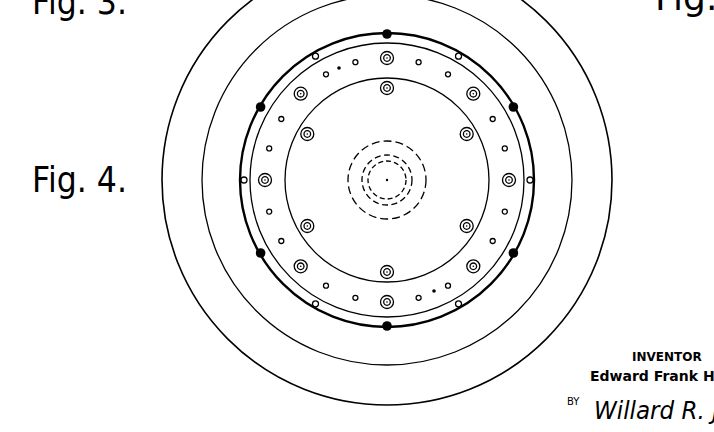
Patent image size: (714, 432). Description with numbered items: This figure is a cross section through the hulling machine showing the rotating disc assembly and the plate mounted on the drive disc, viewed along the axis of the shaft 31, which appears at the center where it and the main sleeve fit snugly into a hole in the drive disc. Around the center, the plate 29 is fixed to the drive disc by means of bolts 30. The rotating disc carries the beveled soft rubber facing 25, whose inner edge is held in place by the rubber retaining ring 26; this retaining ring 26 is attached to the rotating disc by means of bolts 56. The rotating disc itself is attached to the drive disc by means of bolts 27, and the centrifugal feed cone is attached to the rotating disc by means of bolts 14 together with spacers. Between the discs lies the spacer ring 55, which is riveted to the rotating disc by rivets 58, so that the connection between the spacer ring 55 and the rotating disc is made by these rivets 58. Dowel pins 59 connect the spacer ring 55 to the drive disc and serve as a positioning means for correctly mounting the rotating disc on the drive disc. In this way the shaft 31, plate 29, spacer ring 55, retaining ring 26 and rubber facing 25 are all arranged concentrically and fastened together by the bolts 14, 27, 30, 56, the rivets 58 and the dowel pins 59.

The bolts 14 is at (388, 32).
The beveled soft rubber facing 25 is at (600, 127).
The rubber retaining ring 26 is at (530, 152).
The bolts 27 is at (272, 182).
The plate 29 is at (332, 260).
The bolts 30 is at (460, 228).
The shaft 31 is at (387, 180).
The spacer ring 55 is at (317, 90).
The bolts 56 is at (240, 180).
The rivets 58 is at (420, 65).
The dowel pins 59 is at (339, 67).